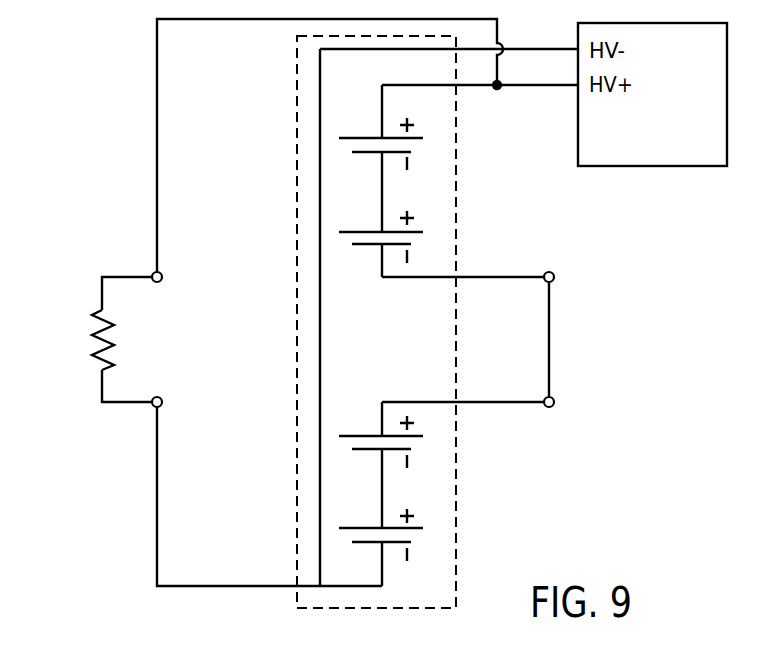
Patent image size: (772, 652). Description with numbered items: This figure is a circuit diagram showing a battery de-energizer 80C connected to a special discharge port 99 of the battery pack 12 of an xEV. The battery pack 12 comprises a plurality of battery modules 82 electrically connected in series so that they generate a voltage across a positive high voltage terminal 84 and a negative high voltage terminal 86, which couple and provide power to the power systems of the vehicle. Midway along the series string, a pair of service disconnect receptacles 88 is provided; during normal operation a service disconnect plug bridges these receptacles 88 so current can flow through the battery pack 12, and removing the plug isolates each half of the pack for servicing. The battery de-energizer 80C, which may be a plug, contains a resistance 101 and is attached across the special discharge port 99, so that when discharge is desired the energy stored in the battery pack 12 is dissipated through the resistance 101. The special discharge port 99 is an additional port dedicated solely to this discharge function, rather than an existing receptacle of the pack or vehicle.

The battery de-energizer 80C is at (110, 317).
The resistance 101 is at (97, 326).
The special discharge port 99 is at (163, 280).
The battery pack 12 is at (296, 350).
The battery modules 82 is at (369, 137).
The service disconnect receptacles 88 is at (545, 283).
The negative high voltage terminal 86 is at (578, 46).
The positive high voltage terminal 84 is at (578, 82).